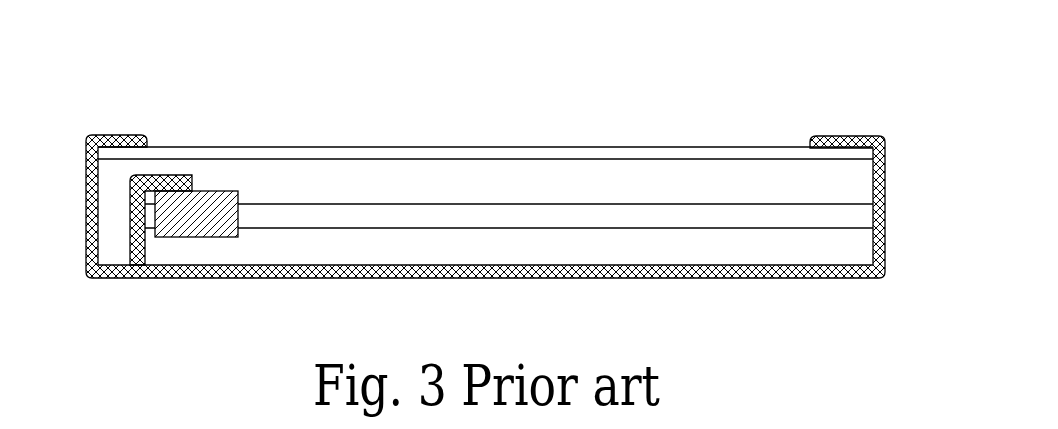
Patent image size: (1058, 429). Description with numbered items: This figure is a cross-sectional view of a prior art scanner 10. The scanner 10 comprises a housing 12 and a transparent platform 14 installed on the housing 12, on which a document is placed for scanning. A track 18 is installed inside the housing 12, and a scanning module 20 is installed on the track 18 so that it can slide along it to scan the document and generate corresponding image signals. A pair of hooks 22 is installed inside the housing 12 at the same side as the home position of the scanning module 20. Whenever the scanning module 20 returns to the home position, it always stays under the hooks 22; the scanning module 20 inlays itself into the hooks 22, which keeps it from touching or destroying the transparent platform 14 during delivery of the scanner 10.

The scanner 10 is at (509, 159).
The housing 12 is at (884, 203).
The transparent platform 14 is at (720, 155).
The track 18 is at (715, 213).
The scanning module 20 is at (238, 237).
The hooks 22 is at (190, 178).